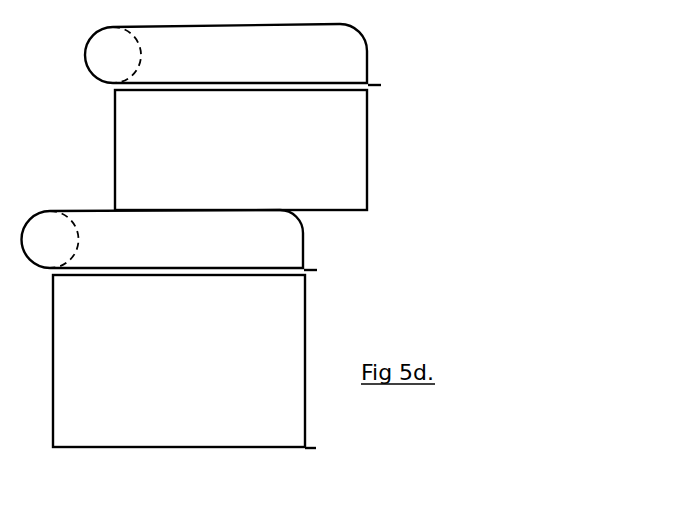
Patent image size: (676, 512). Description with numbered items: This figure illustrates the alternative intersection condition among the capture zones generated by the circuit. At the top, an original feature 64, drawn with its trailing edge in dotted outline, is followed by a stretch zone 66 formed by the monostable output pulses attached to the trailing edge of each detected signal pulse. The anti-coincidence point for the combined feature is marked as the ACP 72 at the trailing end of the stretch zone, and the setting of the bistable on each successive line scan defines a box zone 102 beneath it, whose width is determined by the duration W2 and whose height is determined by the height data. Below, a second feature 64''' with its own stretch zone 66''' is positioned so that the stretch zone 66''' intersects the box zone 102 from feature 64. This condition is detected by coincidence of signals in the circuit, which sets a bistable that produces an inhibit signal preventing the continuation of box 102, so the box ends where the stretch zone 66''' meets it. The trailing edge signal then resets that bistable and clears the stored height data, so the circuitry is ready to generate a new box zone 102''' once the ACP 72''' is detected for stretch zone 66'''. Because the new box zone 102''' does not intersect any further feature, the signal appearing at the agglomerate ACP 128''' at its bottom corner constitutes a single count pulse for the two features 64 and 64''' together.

The original feature 64 is at (113, 55).
The stretch zone 66 is at (240, 53).
The anti-coincidence point (ACP) 72 is at (390, 67).
The box zone 102 is at (241, 150).
The feature 64''' is at (50, 239).
The stretch zone 66''' is at (176, 239).
The ACP 72''' is at (329, 249).
The new box zone 102''' is at (179, 361).
The agglomerate ACP 128''' is at (333, 427).